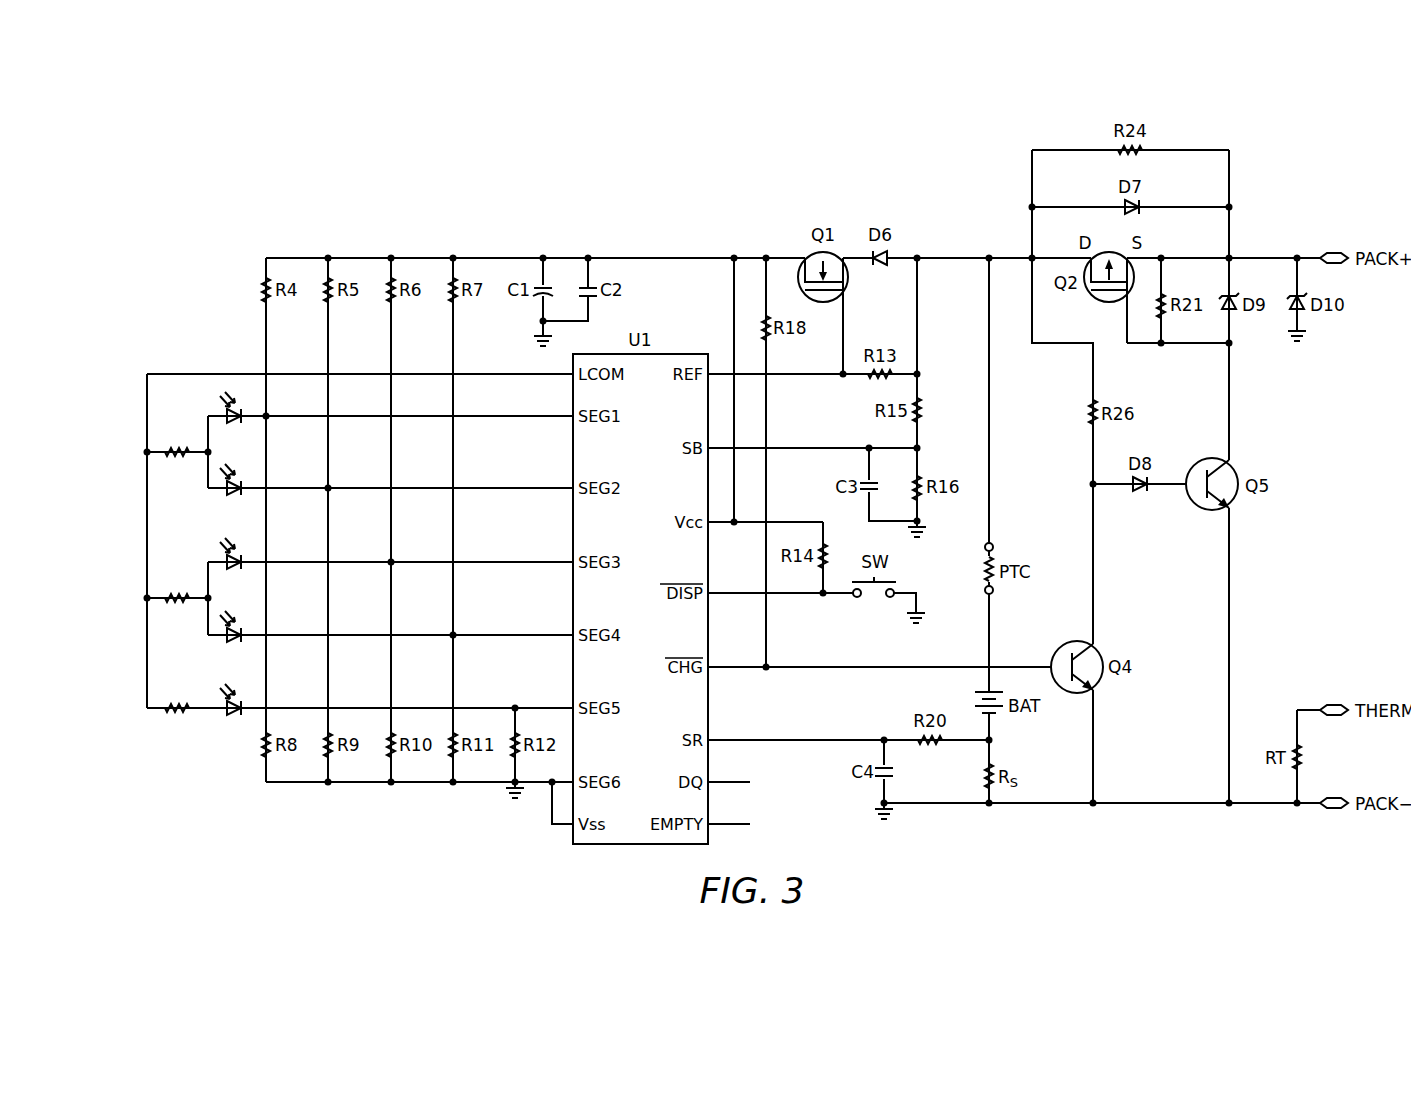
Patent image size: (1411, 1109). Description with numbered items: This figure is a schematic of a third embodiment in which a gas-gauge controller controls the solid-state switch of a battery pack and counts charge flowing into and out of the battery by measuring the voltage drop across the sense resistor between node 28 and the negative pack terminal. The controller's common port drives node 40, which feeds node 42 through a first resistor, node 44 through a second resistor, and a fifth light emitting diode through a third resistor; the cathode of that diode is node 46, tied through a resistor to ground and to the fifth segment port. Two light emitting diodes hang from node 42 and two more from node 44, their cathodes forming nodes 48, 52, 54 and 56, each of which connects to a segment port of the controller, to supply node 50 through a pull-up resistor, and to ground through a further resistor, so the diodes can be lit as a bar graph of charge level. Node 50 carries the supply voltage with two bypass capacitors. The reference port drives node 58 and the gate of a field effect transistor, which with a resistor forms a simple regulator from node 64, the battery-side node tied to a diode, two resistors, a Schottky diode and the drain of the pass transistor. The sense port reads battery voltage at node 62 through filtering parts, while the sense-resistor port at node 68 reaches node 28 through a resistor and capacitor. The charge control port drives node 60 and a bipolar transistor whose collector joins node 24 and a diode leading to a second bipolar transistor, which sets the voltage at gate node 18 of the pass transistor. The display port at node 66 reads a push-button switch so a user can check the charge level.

The gate node 18 is at (1161, 347).
The node 24 is at (1092, 483).
The node 28 is at (992, 741).
The node 40 is at (147, 526).
The node 42 is at (208, 458).
The node 44 is at (208, 604).
The node 46 is at (514, 704).
The node 48 is at (269, 419).
The node 50 is at (734, 256).
The node 52 is at (326, 494).
The node 54 is at (389, 568).
The node 56 is at (451, 641).
The node 58 is at (843, 378).
The node 60 is at (766, 673).
The node 62 is at (922, 448).
The node 64 is at (989, 256).
The node 66 is at (823, 598).
The node 68 is at (884, 738).